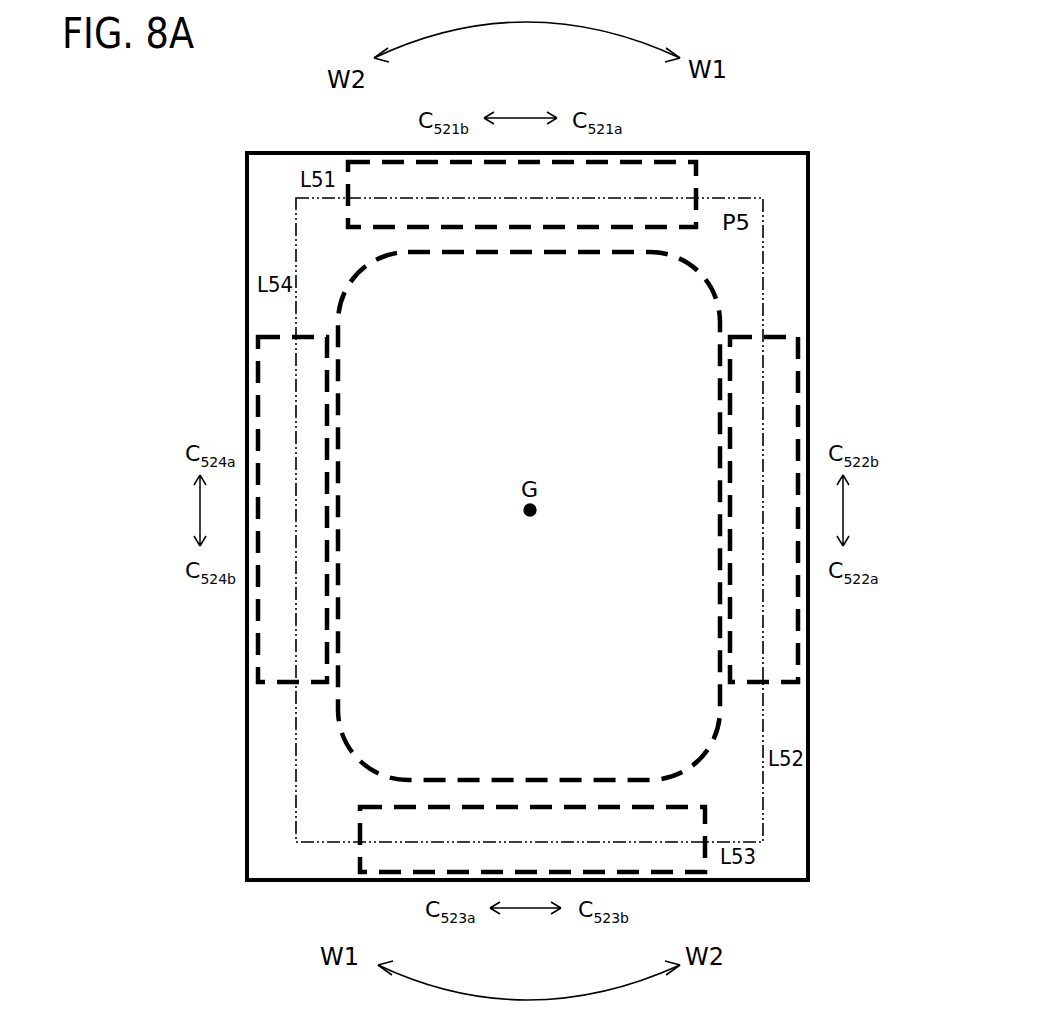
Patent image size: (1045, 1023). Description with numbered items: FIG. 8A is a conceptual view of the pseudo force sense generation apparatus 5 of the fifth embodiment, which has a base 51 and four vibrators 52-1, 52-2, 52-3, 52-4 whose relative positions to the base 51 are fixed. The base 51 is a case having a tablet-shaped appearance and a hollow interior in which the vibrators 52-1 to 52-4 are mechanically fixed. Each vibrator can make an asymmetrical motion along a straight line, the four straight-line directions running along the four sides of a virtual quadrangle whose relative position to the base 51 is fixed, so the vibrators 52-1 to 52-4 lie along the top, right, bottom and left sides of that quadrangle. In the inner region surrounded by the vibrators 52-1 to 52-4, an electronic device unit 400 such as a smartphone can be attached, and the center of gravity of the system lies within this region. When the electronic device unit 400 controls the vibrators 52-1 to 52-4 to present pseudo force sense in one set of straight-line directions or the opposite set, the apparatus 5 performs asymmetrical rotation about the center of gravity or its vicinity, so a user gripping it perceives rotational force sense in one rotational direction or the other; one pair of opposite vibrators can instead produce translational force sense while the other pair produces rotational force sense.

The pseudo force sense generation apparatus 5 is at (845, 59).
The base 51 is at (271, 882).
The vibrator 52-1 is at (675, 172).
The vibrator 52-2 is at (780, 346).
The vibrator 52-3 is at (708, 826).
The vibrator 52-4 is at (278, 653).
The electronic device unit 400 is at (376, 298).